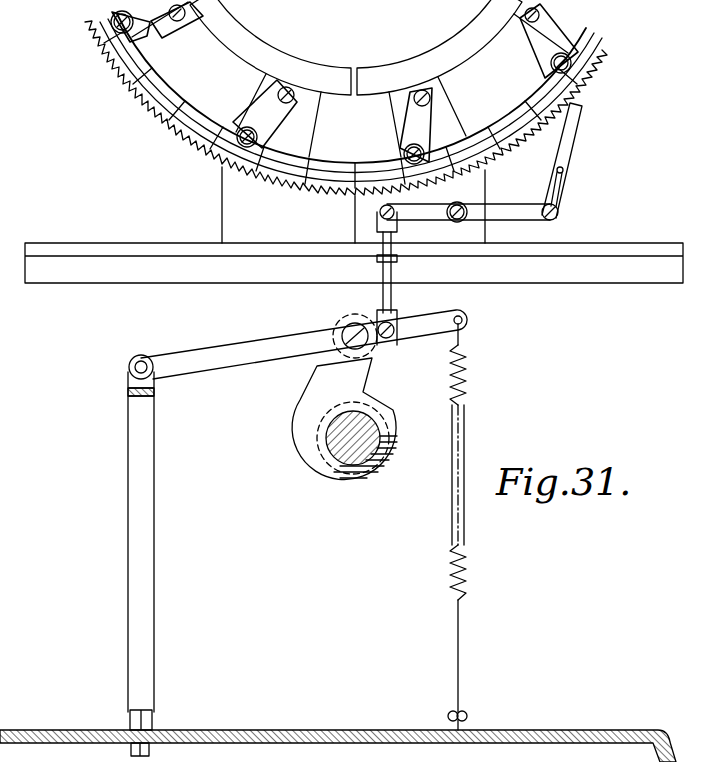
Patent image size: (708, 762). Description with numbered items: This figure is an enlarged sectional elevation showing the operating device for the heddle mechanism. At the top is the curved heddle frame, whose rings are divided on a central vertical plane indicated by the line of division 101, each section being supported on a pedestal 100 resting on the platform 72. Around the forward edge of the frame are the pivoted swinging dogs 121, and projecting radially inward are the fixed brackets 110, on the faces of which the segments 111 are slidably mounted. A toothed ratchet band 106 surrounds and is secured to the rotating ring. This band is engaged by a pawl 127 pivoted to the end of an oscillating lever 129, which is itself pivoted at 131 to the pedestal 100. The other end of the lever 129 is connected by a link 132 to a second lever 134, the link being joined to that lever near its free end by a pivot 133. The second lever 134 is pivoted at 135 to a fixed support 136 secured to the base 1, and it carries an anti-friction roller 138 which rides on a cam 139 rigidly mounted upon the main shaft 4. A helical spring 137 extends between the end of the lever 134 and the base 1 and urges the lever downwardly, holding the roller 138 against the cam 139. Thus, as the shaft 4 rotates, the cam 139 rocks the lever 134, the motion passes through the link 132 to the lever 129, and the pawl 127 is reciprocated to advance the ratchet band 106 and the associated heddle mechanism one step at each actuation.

The base 1 is at (552, 736).
The main shaft 4 is at (352, 466).
The platform 72 is at (545, 284).
The pedestal 100 is at (228, 212).
The line of division 101 is at (356, 219).
The ratchet band 106 is at (590, 83).
The fixed bracket 110 is at (455, 115).
The segment 111 is at (453, 67).
The swinging dog 121 is at (400, 140).
The pawl 127 is at (565, 151).
The oscillating lever 129 is at (450, 190).
The pivot 131 is at (453, 220).
The link 132 is at (395, 262).
The pivot 133 is at (388, 345).
The second lever 134 is at (295, 345).
The pivot 135 is at (143, 362).
The fixed support 136 is at (148, 442).
The helical spring 137 is at (466, 380).
The anti-friction roller 138 is at (355, 320).
The cam 139 is at (305, 405).